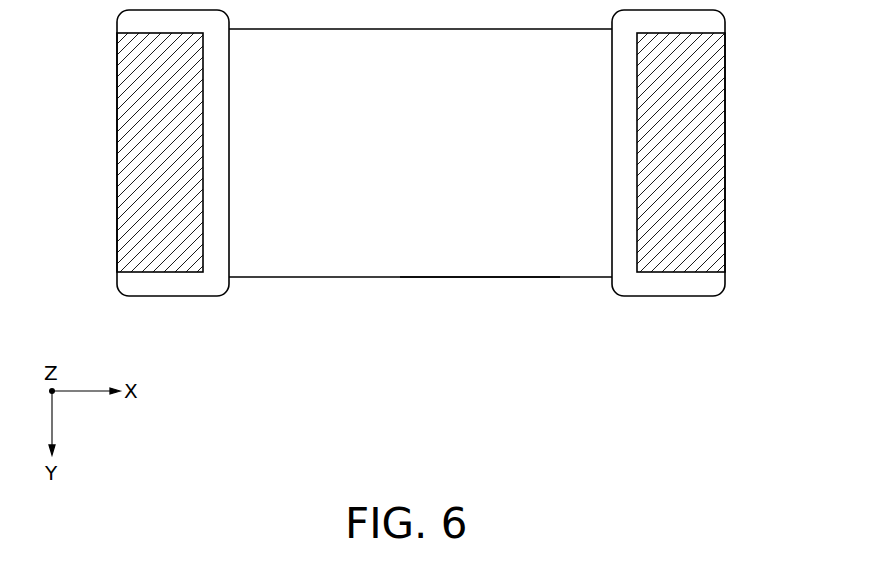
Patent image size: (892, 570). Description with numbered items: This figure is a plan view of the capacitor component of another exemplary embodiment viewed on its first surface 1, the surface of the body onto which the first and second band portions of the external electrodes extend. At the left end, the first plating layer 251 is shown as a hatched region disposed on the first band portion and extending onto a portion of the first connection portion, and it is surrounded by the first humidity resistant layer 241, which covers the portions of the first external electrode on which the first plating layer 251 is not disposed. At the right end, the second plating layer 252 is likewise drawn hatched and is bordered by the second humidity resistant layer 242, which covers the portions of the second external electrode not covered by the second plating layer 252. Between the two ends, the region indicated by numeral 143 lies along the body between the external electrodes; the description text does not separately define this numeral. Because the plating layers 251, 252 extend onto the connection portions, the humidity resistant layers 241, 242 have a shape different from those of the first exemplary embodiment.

The first surface 1 is at (368, 220).
The body cover portion 143 is at (489, 264).
The first humidity resistant layer 241 is at (133, 283).
The first plating layer 251 is at (175, 260).
The second humidity resistant layer 242 is at (707, 282).
The second plating layer 252 is at (669, 262).